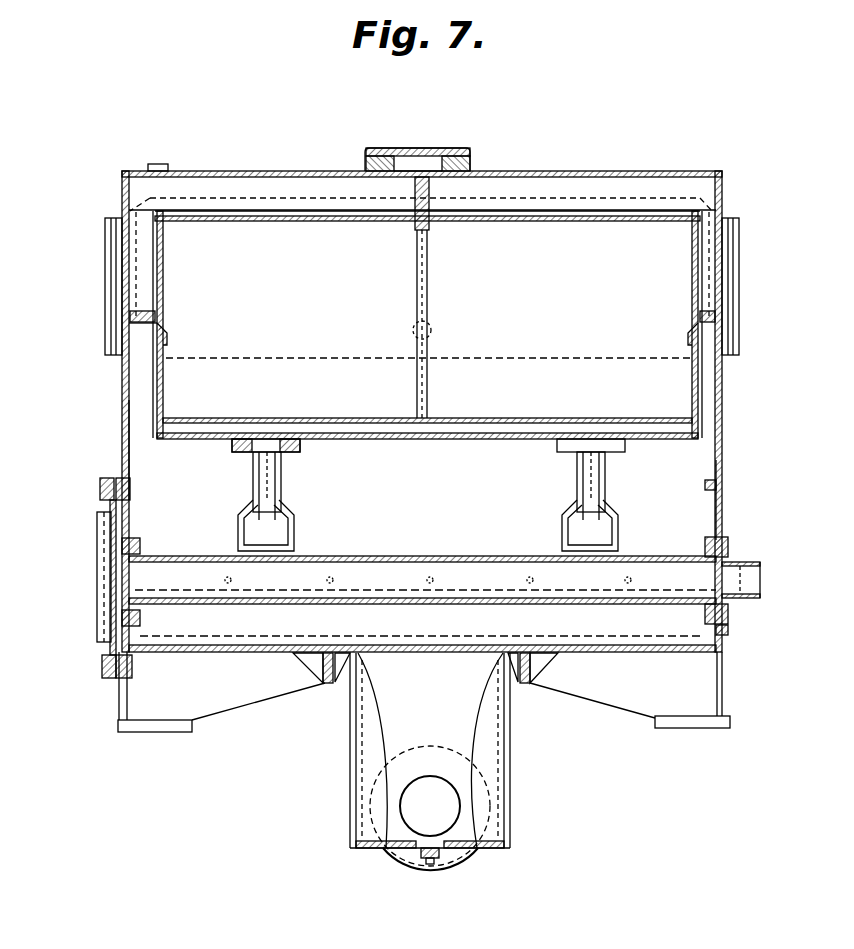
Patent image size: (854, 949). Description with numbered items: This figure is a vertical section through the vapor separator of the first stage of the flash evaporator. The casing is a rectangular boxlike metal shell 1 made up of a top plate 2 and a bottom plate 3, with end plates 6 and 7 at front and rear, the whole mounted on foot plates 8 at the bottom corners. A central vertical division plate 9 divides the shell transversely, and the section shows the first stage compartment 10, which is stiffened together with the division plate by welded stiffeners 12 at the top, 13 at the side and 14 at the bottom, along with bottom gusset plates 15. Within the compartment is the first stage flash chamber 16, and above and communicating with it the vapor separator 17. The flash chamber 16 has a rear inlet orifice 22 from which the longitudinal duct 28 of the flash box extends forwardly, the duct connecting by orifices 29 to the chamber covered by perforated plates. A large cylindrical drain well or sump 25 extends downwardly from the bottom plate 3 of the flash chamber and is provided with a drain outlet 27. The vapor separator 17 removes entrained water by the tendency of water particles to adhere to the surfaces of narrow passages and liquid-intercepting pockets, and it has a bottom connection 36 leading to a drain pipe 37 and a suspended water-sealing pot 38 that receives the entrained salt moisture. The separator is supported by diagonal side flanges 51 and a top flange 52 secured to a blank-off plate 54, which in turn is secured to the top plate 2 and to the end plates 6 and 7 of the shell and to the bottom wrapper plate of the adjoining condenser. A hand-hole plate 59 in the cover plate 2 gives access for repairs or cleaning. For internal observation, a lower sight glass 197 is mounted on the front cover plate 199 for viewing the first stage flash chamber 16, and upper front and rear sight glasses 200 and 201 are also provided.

The metal shell 1 is at (718, 508).
The top plate 2 is at (637, 172).
The bottom plate 3 is at (636, 655).
The end plate 6 is at (128, 447).
The end plate 7 is at (720, 448).
The foot plate 8 is at (158, 732).
The central vertical division plate 9 is at (700, 540).
The first stage compartment 10 is at (135, 398).
The top stiffener 12 is at (257, 185).
The side stiffener 13 is at (716, 473).
The bottom stiffener 14 is at (326, 690).
The bottom gusset plate 15 is at (340, 662).
The first stage flash chamber 16 is at (722, 632).
The vapor separator 17 is at (300, 232).
The rear inlet orifice 22 is at (738, 578).
The drain well 25 is at (500, 790).
The drain outlet 27 is at (405, 797).
The longitudinal duct 28 is at (474, 606).
The orifices 29 is at (452, 562).
The bottom connection 36 is at (242, 456).
The drain pipe 37 is at (284, 490).
The water-sealing pot 38 is at (238, 530).
The diagonal side flanges 51 is at (165, 332).
The top flange 52 is at (517, 215).
The blank-off plate 54 is at (150, 292).
The hand-hole plate 59 is at (432, 160).
The lower sight glass 197 is at (100, 565).
The front cover plate 199 is at (102, 667).
The upper front sight glass 200 is at (108, 270).
The upper rear sight glass 201 is at (735, 300).